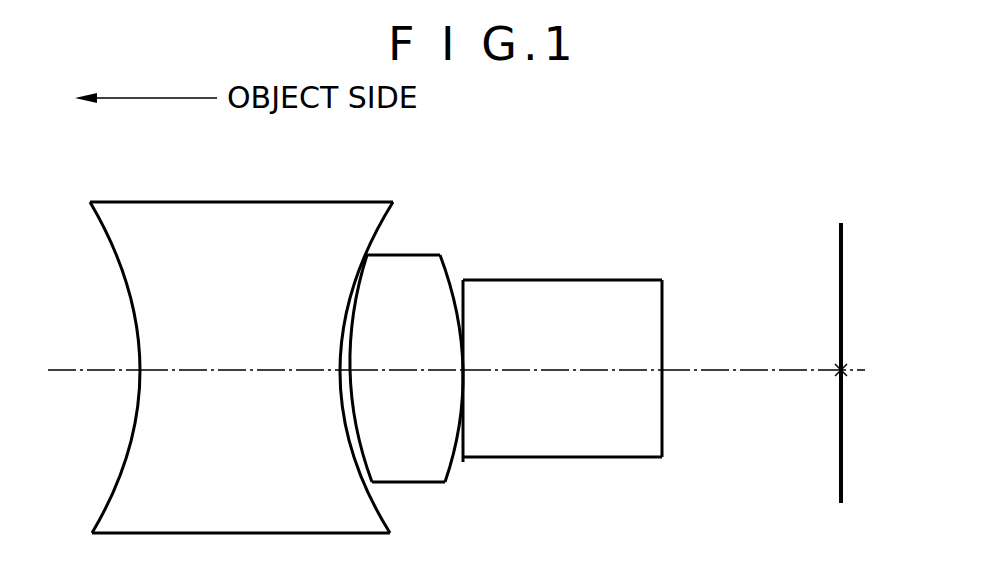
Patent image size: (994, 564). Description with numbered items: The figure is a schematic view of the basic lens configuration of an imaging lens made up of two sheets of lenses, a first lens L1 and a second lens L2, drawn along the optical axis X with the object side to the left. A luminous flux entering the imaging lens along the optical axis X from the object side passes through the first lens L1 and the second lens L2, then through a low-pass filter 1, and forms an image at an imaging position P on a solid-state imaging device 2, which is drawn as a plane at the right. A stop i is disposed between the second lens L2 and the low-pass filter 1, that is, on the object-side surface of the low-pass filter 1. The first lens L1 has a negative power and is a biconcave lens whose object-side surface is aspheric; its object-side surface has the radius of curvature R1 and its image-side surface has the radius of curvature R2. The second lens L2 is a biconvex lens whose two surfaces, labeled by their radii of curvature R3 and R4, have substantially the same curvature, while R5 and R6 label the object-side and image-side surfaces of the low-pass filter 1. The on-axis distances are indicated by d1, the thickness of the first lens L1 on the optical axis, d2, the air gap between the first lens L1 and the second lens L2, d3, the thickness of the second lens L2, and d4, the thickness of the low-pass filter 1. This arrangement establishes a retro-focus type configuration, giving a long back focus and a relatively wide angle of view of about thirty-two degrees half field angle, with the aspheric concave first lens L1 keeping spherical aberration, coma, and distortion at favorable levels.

The first lens L1 is at (218, 335).
The second lens L2 is at (423, 320).
The radius of curvature of the object-side surface of the first lens R1 is at (108, 244).
The radius of curvature of the image-side surface of the first lens R2 is at (361, 341).
The radius of curvature of the object-side surface of the second lens R3 is at (364, 262).
The radius of curvature of the image-side surface of the second lens R4 is at (455, 260).
The radius of curvature of the object-side surface of the low-pass filter R5 is at (465, 282).
The radius of curvature of the image-side surface of the low-pass filter R6 is at (667, 283).
The low-pass filter 1 is at (595, 339).
The solid-state imaging device 2 is at (838, 243).
The imaging position P is at (840, 374).
The optical axis X is at (83, 372).
The thickness of the first lens on the optical axis d1 is at (222, 370).
The air gap between the first lens and the second lens on the optical axis d2 is at (340, 370).
The thickness of the second lens on the optical axis d3 is at (413, 370).
The thickness of the low-pass filter on the optical axis d4 is at (558, 370).
The stop i is at (463, 458).